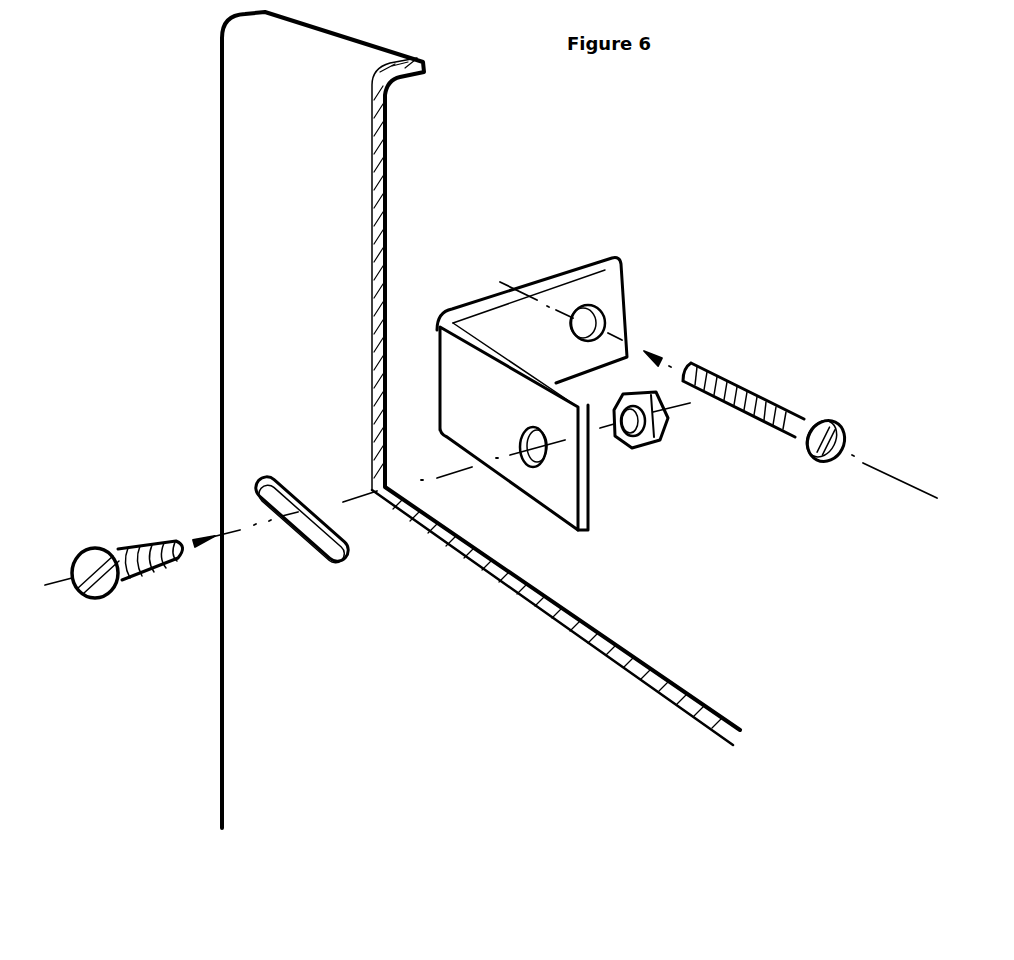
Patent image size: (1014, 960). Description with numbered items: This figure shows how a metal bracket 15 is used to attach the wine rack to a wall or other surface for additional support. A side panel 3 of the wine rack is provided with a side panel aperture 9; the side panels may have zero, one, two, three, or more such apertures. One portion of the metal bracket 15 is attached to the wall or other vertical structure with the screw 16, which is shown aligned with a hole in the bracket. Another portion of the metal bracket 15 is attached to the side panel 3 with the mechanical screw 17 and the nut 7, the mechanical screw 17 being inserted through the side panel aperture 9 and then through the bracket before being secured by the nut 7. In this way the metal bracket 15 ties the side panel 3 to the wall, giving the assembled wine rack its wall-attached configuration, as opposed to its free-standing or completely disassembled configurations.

The side panel 3 is at (252, 112).
The nut 7 is at (660, 442).
The side panel aperture 9 is at (325, 508).
The metal bracket 15 is at (556, 300).
The screw 16 is at (797, 423).
The mechanical screw 17 is at (118, 548).